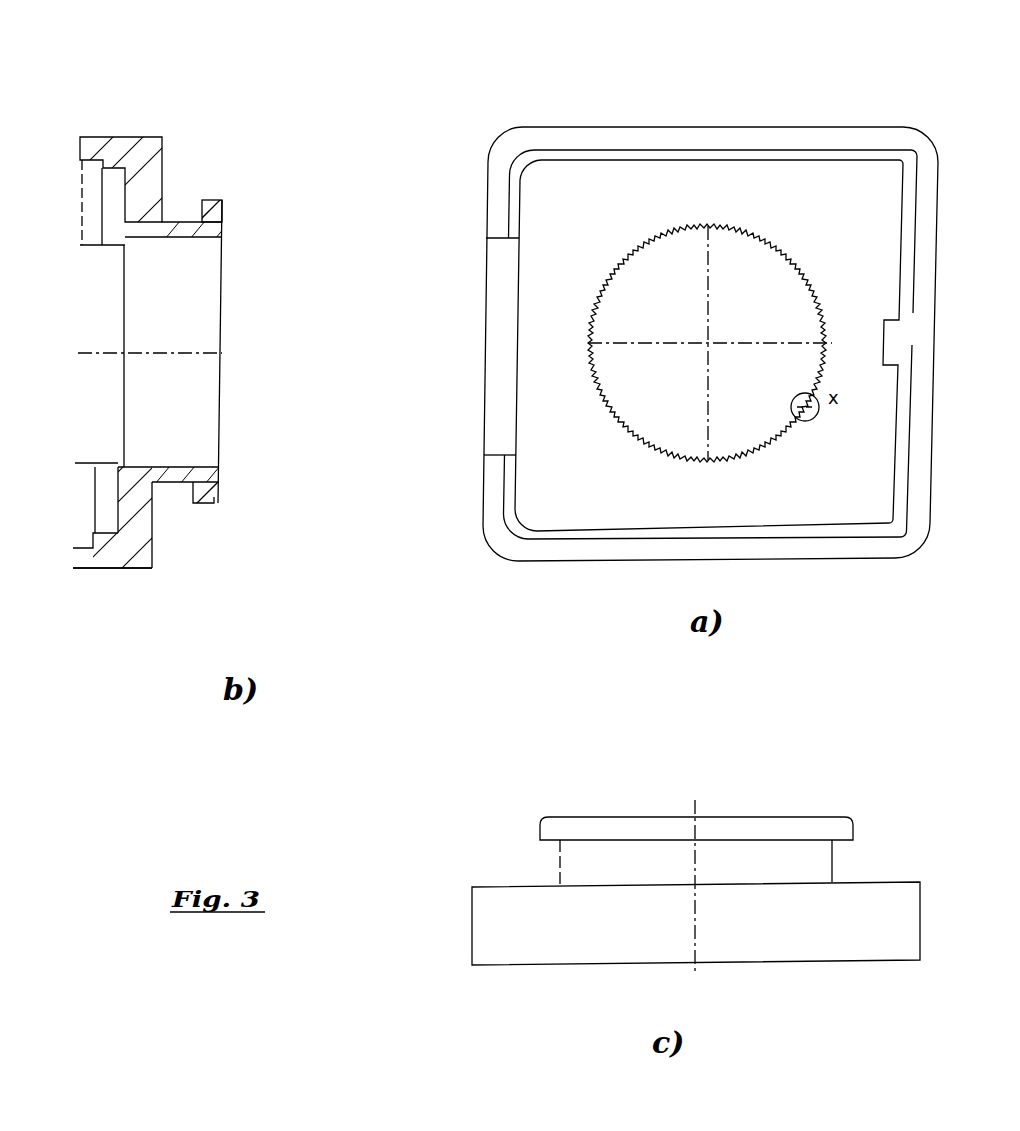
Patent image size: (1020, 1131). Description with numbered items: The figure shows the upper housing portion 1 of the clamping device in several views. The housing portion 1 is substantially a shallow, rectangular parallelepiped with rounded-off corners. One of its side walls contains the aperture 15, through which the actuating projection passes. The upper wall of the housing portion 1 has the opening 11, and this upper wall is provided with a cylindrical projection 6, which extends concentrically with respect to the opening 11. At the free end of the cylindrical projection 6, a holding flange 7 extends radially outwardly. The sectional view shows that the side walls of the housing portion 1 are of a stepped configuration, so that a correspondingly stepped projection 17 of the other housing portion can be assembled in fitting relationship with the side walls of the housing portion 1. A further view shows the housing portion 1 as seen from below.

The upper housing portion 1 is at (617, 126).
The cylindrical projection 6 is at (175, 228).
The holding flange 7 is at (222, 203).
The opening 11 is at (591, 383).
The aperture 15 is at (500, 278).
The stepped projection 17 is at (82, 557).